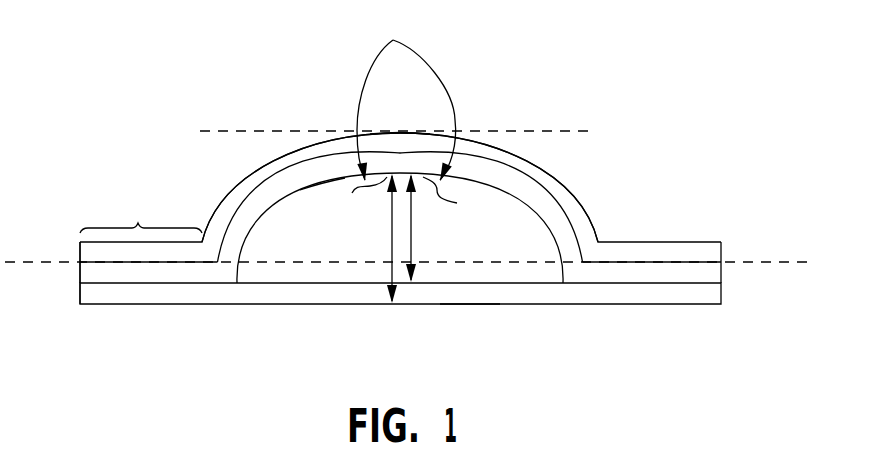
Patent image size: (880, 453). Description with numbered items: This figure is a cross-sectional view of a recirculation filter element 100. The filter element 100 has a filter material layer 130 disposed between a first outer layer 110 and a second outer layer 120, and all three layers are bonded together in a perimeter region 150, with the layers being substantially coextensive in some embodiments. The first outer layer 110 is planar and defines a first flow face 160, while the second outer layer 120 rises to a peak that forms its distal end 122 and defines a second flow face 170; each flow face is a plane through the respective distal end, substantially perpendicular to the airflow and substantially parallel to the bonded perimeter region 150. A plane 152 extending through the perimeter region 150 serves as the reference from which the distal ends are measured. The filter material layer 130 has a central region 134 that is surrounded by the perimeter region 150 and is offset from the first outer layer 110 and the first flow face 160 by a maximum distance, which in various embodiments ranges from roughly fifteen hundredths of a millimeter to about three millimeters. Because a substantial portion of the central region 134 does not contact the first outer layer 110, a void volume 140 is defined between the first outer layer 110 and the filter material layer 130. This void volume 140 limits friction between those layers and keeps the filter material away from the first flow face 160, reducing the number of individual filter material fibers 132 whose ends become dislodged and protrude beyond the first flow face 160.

The filter element 100 is at (142, 106).
The first outer layer 110 is at (713, 292).
The second outer layer 120 is at (675, 252).
The distal end of the second outer layer 122 is at (400, 131).
The filter material layer 130 is at (712, 275).
The filter material fibers 132 is at (404, 110).
The central region 134 is at (327, 205).
The void volume 140 is at (343, 276).
The perimeter region 150 is at (141, 216).
The plane 152 is at (17, 238).
The first flow face 160 is at (468, 307).
The second flow face 170 is at (565, 116).